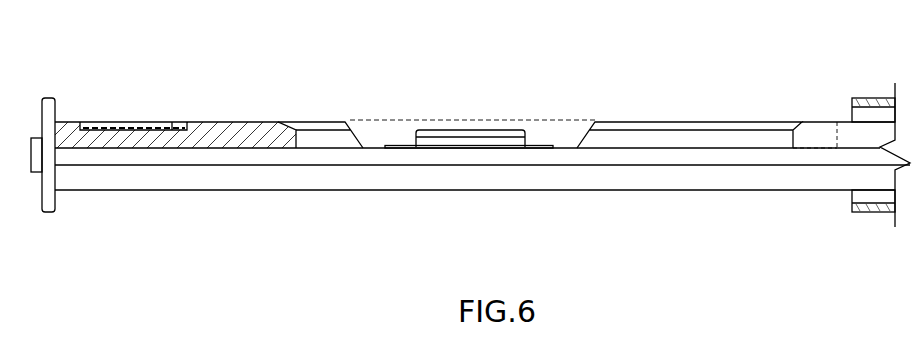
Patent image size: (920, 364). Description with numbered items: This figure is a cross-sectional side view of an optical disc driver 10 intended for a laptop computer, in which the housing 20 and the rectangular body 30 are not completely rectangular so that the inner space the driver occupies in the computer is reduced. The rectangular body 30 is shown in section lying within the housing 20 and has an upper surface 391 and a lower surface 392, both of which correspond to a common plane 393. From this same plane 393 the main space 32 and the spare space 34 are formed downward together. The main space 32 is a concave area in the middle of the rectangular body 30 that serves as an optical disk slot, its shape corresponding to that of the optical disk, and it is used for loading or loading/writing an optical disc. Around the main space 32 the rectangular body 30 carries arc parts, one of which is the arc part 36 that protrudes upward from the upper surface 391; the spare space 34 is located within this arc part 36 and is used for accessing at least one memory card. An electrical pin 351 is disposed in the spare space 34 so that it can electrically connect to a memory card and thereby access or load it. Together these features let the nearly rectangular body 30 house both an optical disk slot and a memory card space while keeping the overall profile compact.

The optical disc driver 10 is at (45, 28).
The housing 20 is at (863, 100).
The rectangular body 30 is at (482, 204).
The main space 32 is at (363, 135).
The spare space 34 is at (122, 95).
The electrical pin 351 is at (155, 122).
The arc part 36 is at (172, 110).
The upper surface 391 is at (372, 147).
The lower surface 392 is at (562, 190).
The plane 393 is at (552, 120).